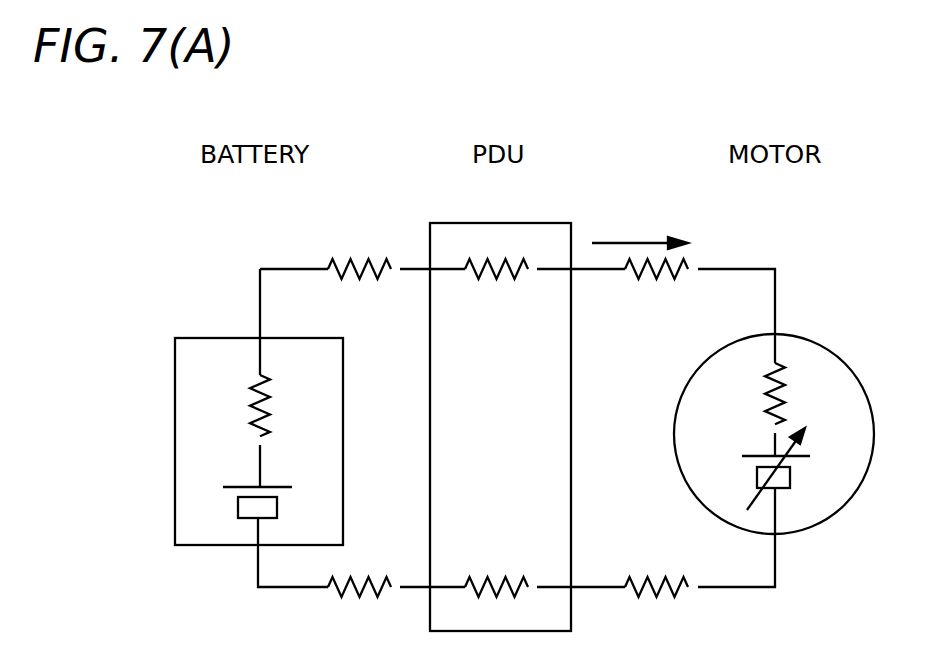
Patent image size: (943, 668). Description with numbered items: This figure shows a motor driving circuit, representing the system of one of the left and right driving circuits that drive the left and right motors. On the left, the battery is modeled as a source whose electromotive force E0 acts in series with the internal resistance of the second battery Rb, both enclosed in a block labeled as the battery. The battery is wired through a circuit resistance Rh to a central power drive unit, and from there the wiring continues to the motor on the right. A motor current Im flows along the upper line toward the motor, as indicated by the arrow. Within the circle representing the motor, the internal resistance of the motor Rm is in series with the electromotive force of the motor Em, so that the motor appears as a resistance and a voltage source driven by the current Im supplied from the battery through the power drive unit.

The internal resistance of the second battery Rb is at (281, 405).
The electromotive force of the second battery E0 is at (239, 485).
The circuit resistance Rh is at (359, 605).
The motor current Im is at (672, 249).
The internal resistance of the motor Rm is at (742, 395).
The electromotive force of the motor Em is at (755, 469).